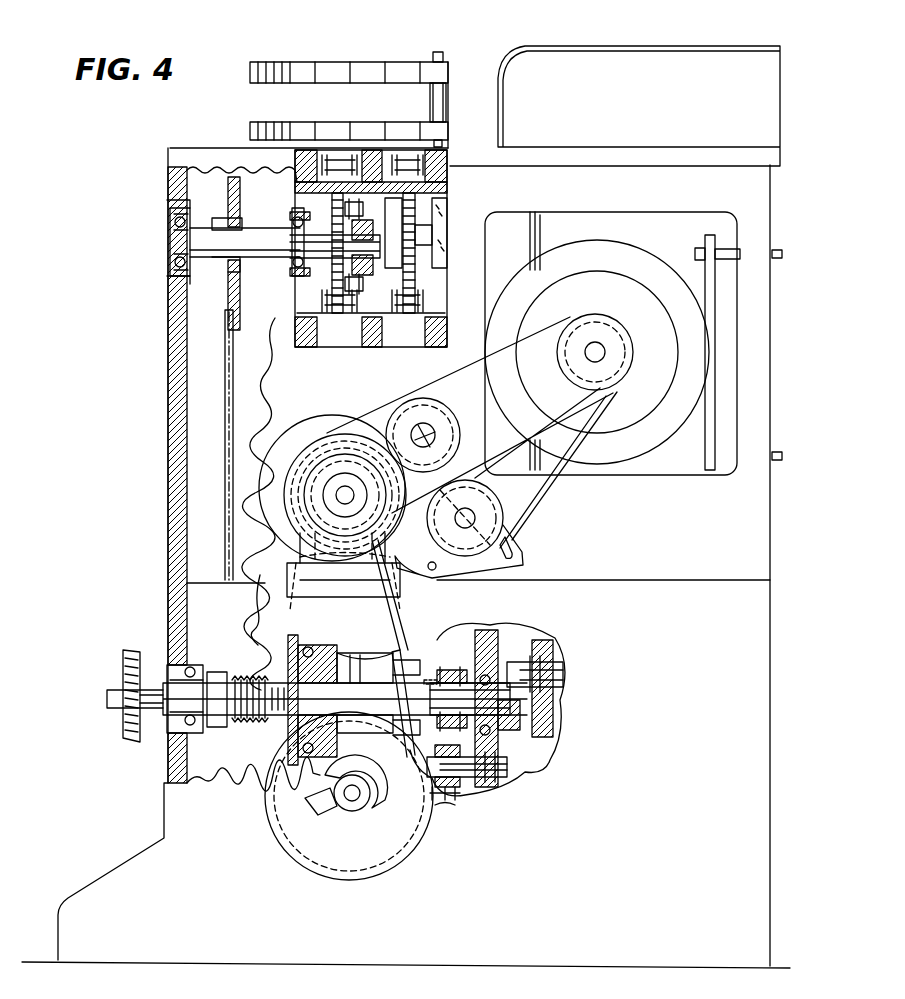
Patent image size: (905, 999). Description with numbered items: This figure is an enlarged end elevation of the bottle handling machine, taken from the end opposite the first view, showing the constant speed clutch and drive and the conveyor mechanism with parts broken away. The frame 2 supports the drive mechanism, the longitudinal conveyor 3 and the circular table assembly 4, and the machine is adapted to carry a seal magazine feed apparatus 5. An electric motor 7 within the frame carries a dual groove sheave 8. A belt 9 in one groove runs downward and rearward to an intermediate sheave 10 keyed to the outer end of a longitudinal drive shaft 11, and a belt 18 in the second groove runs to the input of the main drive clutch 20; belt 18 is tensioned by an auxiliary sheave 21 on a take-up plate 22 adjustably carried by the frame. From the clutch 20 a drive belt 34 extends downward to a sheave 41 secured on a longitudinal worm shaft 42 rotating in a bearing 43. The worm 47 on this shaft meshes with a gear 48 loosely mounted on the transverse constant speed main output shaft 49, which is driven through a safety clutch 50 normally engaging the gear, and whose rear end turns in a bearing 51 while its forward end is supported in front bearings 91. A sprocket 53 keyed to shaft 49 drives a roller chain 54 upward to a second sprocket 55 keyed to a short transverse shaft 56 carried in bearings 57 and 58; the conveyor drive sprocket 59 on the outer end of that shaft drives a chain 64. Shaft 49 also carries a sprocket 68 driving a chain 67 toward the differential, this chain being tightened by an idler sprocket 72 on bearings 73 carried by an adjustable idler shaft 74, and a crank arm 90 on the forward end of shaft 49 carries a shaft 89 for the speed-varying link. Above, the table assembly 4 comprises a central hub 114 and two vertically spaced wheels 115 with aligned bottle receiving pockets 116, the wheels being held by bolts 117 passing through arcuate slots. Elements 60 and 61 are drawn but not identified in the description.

The frame 2 is at (170, 441).
The longitudinal conveyor 3 is at (358, 144).
The circular table assembly 4 is at (454, 50).
The seal magazine feed apparatus 5 is at (345, 600).
The electric motor 7 is at (633, 252).
The dual groove sheave 8 is at (615, 341).
The belt 9 is at (502, 348).
The intermediate sheave 10 is at (441, 414).
The longitudinal drive shaft 11 is at (428, 432).
The belt 18 is at (540, 490).
The main drive clutch 20 is at (308, 418).
The auxiliary sheave 21 is at (450, 492).
The take-up plate 22 is at (522, 560).
The drive belt 34 is at (400, 590).
The sheave 41 is at (315, 850).
The worm shaft 42 is at (352, 812).
The bearing 43 is at (330, 800).
The worm 47 is at (372, 808).
The gear 48 is at (394, 618).
The constant speed main output shaft 49 is at (149, 670).
The safety clutch 50 is at (286, 646).
The bearing 51 is at (195, 670).
The sprocket 53 is at (222, 730).
The roller chain 54 is at (222, 485).
The second sprocket 55 is at (237, 200).
The short transverse shaft 56 is at (257, 263).
The bearing 57 is at (187, 221).
The bearing 58 is at (292, 225).
The conveyor drive sprocket 59 is at (364, 265).
The connecting bar 60 is at (430, 104).
The gear 61 is at (405, 296).
The chain 64 is at (350, 210).
The chain 67 is at (455, 672).
The sprocket 68 is at (434, 680).
The idler sprocket 72 is at (440, 797).
The bearings 73 is at (428, 768).
The idler shaft 74 is at (510, 768).
The shaft 89 is at (560, 673).
The crank arm 90 is at (505, 666).
The front bearings 91 is at (470, 718).
The hub 114 is at (490, 113).
The wheels 115 is at (270, 126).
The bottle receiving pockets 116 is at (378, 72).
The bolts 117 is at (438, 60).